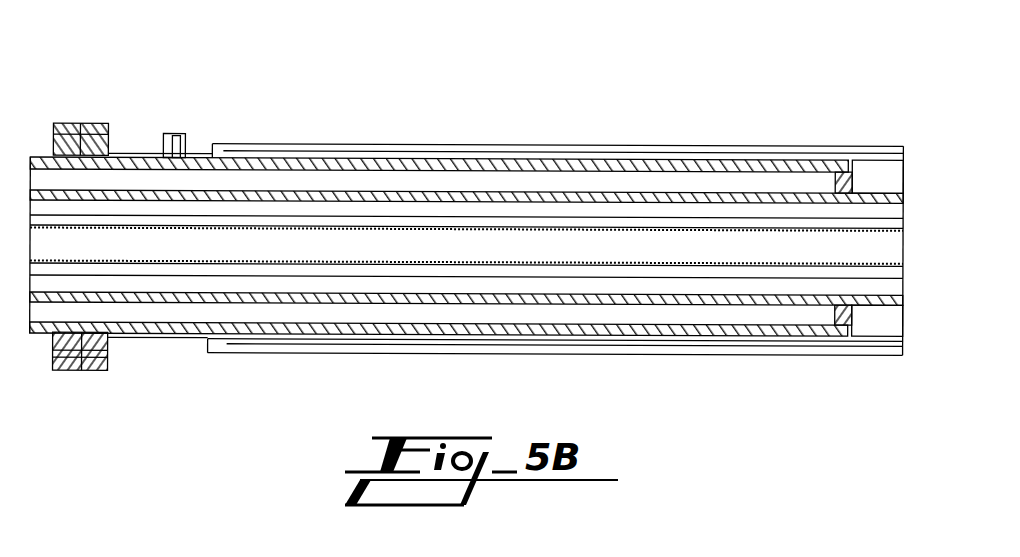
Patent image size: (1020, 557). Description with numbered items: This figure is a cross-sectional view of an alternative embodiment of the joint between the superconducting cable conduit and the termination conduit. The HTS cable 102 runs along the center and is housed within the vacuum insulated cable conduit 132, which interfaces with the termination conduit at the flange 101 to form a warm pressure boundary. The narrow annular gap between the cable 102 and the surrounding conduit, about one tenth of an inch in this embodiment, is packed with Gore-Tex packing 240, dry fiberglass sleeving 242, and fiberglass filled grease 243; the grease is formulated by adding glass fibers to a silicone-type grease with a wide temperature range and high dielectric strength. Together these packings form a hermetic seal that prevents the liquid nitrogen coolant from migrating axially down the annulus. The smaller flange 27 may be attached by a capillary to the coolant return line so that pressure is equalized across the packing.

The flange 101 is at (70, 123).
The flange 27 is at (168, 133).
The fiberglass filled grease 243 is at (185, 135).
The vacuum insulated cable conduit 132 is at (382, 160).
The HTS cable 102 is at (483, 217).
The dry fiberglass sleeving 242 is at (785, 158).
The Gore-Tex packing 240 is at (840, 158).